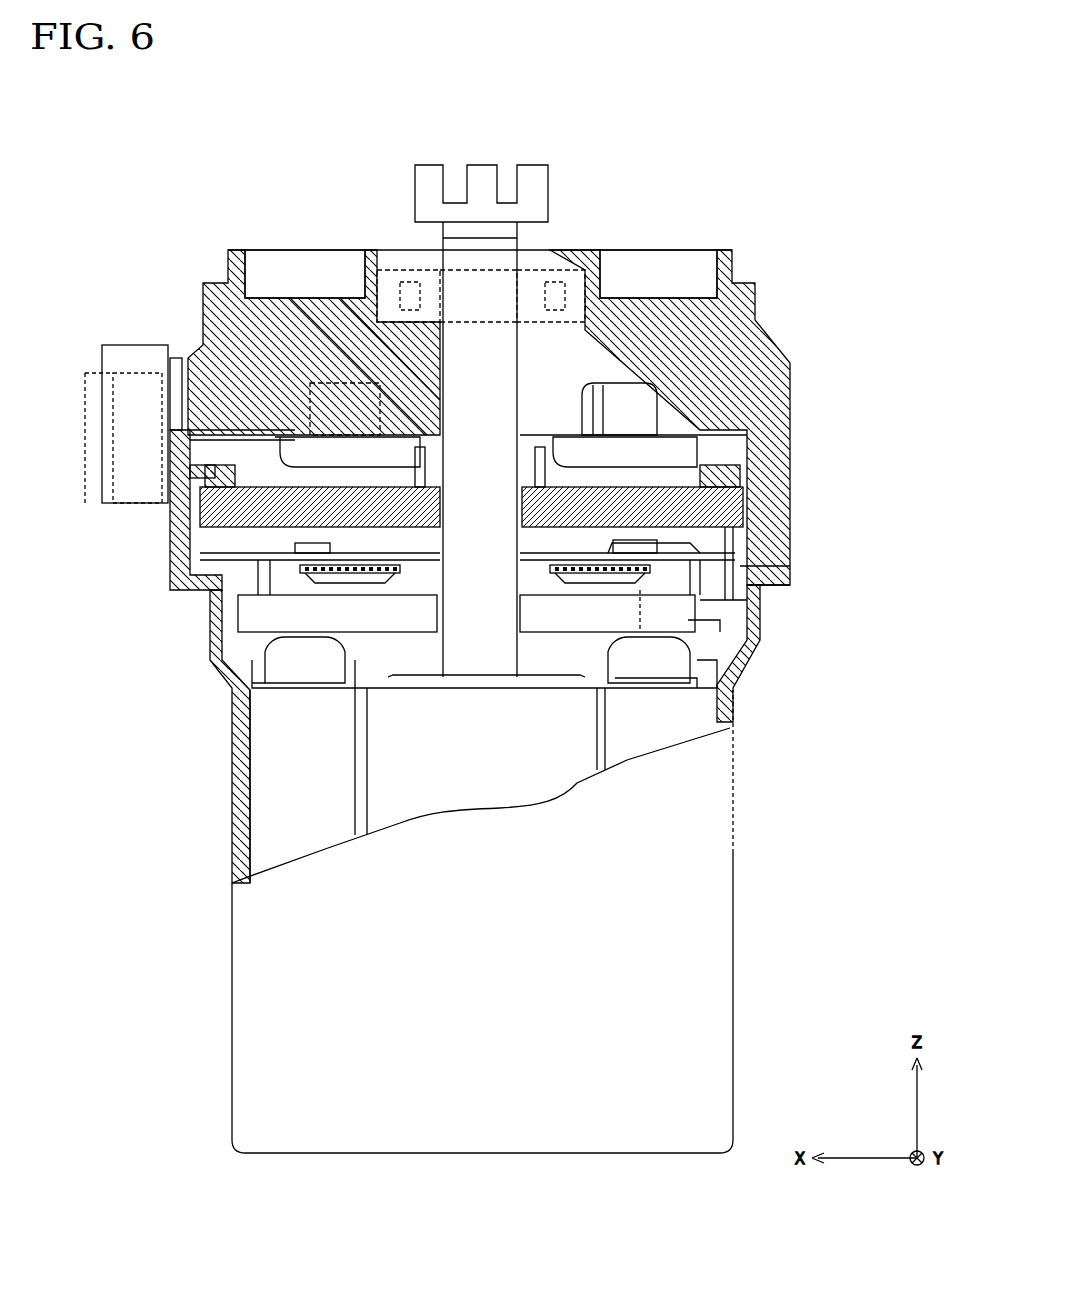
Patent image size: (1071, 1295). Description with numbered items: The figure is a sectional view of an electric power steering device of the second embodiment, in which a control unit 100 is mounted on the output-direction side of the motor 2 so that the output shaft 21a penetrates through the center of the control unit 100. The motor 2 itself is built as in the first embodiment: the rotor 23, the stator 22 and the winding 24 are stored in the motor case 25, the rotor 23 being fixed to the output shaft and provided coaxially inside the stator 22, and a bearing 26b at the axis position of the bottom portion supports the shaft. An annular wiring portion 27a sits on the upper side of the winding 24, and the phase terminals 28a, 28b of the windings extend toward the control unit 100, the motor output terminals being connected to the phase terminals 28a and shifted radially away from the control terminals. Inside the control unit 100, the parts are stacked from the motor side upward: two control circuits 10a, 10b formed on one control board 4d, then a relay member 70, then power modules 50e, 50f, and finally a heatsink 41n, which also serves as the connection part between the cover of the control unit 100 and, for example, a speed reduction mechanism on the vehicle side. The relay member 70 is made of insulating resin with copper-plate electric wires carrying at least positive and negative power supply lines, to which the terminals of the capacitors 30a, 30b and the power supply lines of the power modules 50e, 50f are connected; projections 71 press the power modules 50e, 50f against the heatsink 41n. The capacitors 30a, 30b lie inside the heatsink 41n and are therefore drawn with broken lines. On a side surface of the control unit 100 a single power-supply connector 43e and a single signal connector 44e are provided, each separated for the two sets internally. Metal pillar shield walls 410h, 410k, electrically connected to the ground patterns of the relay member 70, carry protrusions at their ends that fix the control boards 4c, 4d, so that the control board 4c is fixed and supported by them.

The motor 2 is at (727, 977).
The control board 4c is at (740, 568).
The control board 4d is at (215, 540).
The control circuit 10a is at (710, 650).
The control circuit 10b is at (290, 631).
The output shaft 21a is at (720, 710).
The stator 22 is at (280, 835).
The rotor 23 is at (567, 778).
The winding 24 is at (715, 698).
The motor case 25 is at (227, 790).
The bearing 26b is at (390, 268).
The annular wiring portion 27a is at (222, 658).
The phase terminal 28a is at (760, 597).
The phase terminal 28b is at (307, 567).
The capacitor 30a is at (612, 385).
The capacitor 30b is at (400, 440).
The heatsink 41n is at (735, 262).
The connector 43e is at (108, 345).
The connector 44e is at (175, 375).
The power module 50e is at (680, 480).
The power module 50f is at (385, 430).
The relay member 70 is at (745, 493).
The projection 71 is at (660, 450).
The control unit 100 is at (793, 457).
The shield wall 410h is at (710, 543).
The shield wall 410k is at (210, 550).